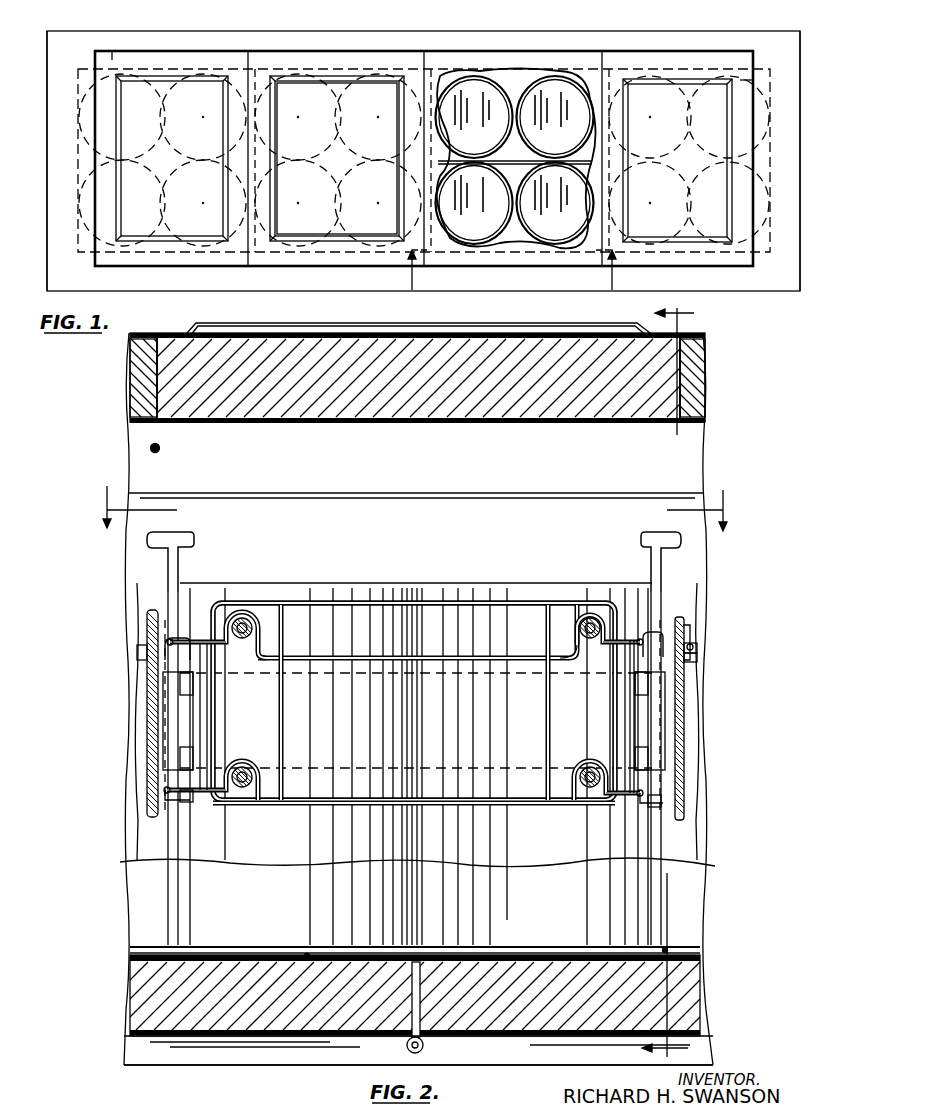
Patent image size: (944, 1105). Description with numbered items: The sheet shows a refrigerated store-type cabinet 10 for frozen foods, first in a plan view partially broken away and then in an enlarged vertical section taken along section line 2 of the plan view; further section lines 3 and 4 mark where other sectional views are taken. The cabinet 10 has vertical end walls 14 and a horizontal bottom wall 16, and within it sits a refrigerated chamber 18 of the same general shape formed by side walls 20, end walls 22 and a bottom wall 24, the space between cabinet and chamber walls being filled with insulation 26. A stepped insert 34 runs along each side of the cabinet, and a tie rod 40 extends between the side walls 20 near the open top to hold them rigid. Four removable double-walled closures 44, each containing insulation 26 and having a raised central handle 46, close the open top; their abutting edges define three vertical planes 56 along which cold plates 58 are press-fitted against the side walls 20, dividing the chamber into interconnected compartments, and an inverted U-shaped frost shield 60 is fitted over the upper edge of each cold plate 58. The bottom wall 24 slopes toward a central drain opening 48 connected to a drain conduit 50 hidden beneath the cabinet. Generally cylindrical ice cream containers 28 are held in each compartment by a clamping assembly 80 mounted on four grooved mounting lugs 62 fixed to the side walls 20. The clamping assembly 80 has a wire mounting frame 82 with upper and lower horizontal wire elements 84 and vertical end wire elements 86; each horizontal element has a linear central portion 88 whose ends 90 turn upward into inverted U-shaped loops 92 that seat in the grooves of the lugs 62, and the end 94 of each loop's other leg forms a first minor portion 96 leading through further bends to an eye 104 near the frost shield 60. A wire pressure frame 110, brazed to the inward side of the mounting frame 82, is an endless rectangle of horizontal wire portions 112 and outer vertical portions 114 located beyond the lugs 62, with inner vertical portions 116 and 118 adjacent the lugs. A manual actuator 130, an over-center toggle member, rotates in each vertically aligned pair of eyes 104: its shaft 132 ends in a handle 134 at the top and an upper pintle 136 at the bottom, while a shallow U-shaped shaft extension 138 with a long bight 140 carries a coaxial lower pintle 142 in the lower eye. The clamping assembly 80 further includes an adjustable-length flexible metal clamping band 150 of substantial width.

In FIG. 1, the cabinet 10 is at (752, 303).
In FIG. 2, the cabinet 10 is at (122, 1009).
In FIG. 1, the end walls 14 is at (47, 122).
In FIG. 2, the bottom wall 16 is at (540, 1052).
In FIG. 1, the refrigerated chamber 18 is at (770, 73).
In FIG. 2, the refrigerated chamber 18 is at (690, 462).
In FIG. 1, the side walls 20 is at (349, 60).
In FIG. 1, the end walls 22 is at (78, 156).
In FIG. 2, the bottom wall 24 is at (286, 958).
In FIG. 2, the insulation 26 is at (510, 362).
In FIG. 1, the containers 28 is at (535, 152).
In FIG. 1, the insert 34 is at (112, 50).
In FIG. 2, the tie rod 40 is at (162, 448).
In FIG. 1, the closures 44 is at (170, 58).
In FIG. 2, the closures 44 is at (140, 378).
In FIG. 1, the handle 46 is at (368, 90).
In FIG. 2, the handle 46 is at (346, 322).
In FIG. 2, the drain opening 48 is at (420, 965).
In FIG. 2, the drain conduit 50 is at (424, 1047).
In FIG. 1, the vertical plane 56 is at (251, 66).
In FIG. 2, the vertical plane 56 is at (157, 333).
In FIG. 2, the cold plate 58 is at (146, 690).
In FIG. 2, the frost shield 60 is at (137, 712).
In FIG. 2, the mounting lugs 62 is at (238, 617).
In FIG. 2, the clamping assembly 80 is at (211, 592).
In FIG. 2, the wire mounting frame 82 is at (326, 797).
In FIG. 2, the horizontal wire element 84 is at (469, 660).
In FIG. 2, the vertical end wire elements 86 is at (190, 638).
In FIG. 2, the linear central portion 88 is at (530, 661).
In FIG. 2, the end 90 is at (262, 650).
In FIG. 2, the mounting loop 92 is at (250, 618).
In FIG. 2, the end 94 is at (221, 646).
In FIG. 2, the first minor portion 96 is at (614, 646).
In FIG. 2, the eye 104 is at (692, 634).
In FIG. 2, the pressure frame 110 is at (492, 586).
In FIG. 2, the horizontal wire portions 112 is at (526, 600).
In FIG. 2, the vertical outer wire portions 114 is at (206, 701).
In FIG. 2, the inner vertical wire portion 116 is at (283, 700).
In FIG. 2, the inner vertical wire portion 118 is at (546, 718).
In FIG. 2, the manual actuator 130 is at (636, 538).
In FIG. 2, the shaft 132 is at (655, 582).
In FIG. 2, the handle 134 is at (180, 532).
In FIG. 2, the upper pintle 136 is at (180, 655).
In FIG. 2, the shaft extension 138 is at (692, 663).
In FIG. 2, the bight 140 is at (192, 728).
In FIG. 2, the lower pintle 142 is at (186, 803).
In FIG. 1, the clamping band 150 is at (508, 133).
In FIG. 1, the section line 2— 2 is at (512, 271).
In FIG. 2, the section line 3- 3 is at (412, 508).
In FIG. 2, the section line 4- 4 is at (676, 680).